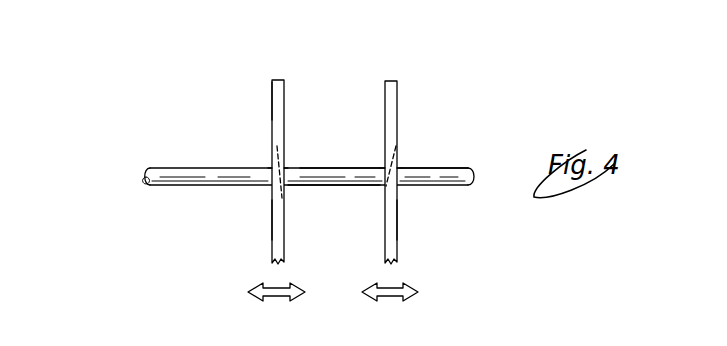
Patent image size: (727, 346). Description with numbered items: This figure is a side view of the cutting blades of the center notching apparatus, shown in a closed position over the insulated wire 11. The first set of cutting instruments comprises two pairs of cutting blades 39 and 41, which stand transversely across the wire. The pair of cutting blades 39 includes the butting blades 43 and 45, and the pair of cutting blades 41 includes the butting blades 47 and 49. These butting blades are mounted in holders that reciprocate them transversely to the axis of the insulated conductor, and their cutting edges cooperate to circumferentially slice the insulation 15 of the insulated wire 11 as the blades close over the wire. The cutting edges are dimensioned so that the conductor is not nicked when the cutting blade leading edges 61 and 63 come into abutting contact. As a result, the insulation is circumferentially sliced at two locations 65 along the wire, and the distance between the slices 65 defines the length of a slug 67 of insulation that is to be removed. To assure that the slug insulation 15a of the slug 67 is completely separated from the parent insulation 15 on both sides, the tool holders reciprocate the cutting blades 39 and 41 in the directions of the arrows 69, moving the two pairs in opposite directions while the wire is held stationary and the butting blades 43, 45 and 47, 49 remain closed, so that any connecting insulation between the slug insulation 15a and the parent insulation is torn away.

The insulated wire 11 is at (473, 165).
The insulation 15 is at (150, 176).
The slug insulation 15a is at (322, 168).
The pair of cutting blades 39 is at (391, 140).
The pair of cutting blades 41 is at (267, 148).
The butting blade 43 is at (397, 94).
The butting blade 45 is at (397, 225).
The butting blade 47 is at (272, 93).
The butting blade 49 is at (272, 213).
The cutting blade leading edge 61 is at (388, 185).
The cutting blade leading edge 63 is at (281, 174).
The slice location 65 is at (272, 172).
The slug 67 is at (356, 184).
The arrows 69 is at (284, 294).